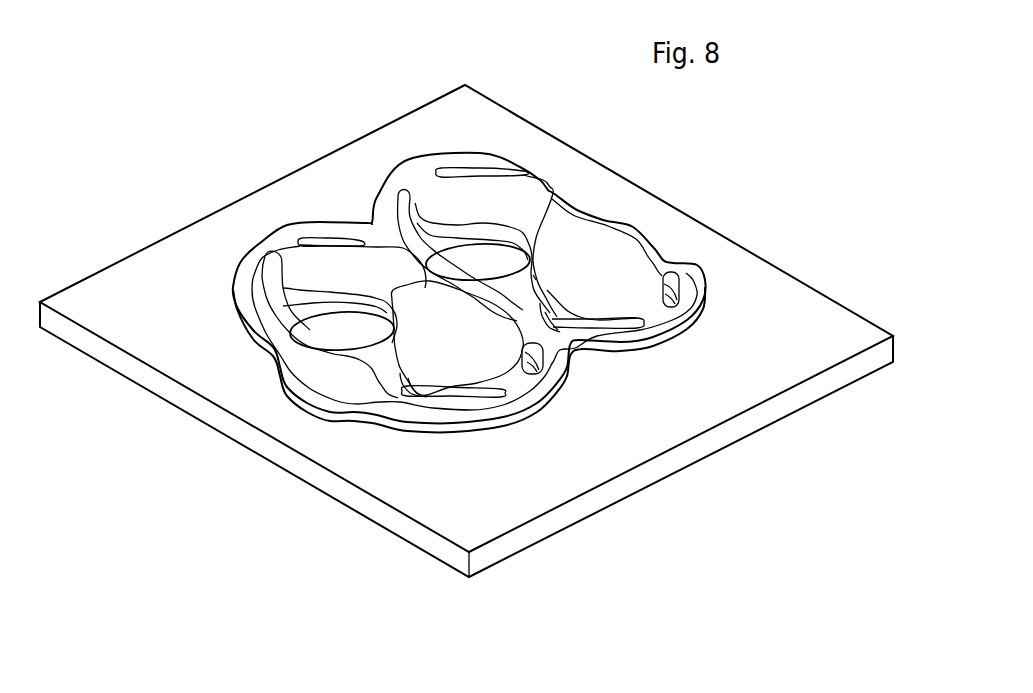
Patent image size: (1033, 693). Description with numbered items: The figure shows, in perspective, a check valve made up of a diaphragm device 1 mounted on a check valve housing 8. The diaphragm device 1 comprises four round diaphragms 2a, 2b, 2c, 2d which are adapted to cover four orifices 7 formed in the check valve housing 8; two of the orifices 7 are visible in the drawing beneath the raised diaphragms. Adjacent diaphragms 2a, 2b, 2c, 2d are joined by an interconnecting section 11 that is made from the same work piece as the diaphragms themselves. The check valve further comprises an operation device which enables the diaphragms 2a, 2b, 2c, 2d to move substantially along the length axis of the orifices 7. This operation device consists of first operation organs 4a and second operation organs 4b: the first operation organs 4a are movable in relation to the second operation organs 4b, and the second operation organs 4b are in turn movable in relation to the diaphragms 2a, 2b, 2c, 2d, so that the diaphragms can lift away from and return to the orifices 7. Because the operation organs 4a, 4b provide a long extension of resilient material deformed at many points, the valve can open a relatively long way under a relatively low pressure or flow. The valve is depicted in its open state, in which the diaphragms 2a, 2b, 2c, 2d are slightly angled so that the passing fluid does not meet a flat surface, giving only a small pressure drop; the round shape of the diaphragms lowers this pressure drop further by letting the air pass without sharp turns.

The diaphragm device 1 is at (355, 193).
The diaphragm 2a is at (497, 206).
The diaphragm 2b is at (628, 282).
The diaphragm 2c is at (356, 276).
The diaphragm 2d is at (483, 344).
The first operation organ 4a is at (522, 170).
The second operation organ 4b is at (430, 183).
The orifice 7 is at (480, 268).
The check valve housing 8 is at (770, 313).
The interconnecting section 11 is at (418, 297).